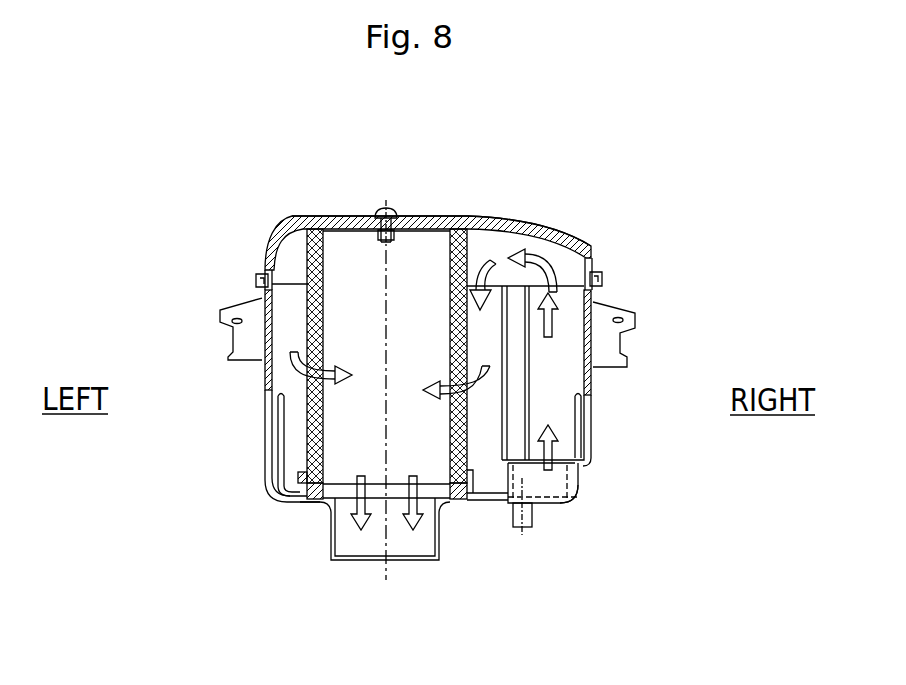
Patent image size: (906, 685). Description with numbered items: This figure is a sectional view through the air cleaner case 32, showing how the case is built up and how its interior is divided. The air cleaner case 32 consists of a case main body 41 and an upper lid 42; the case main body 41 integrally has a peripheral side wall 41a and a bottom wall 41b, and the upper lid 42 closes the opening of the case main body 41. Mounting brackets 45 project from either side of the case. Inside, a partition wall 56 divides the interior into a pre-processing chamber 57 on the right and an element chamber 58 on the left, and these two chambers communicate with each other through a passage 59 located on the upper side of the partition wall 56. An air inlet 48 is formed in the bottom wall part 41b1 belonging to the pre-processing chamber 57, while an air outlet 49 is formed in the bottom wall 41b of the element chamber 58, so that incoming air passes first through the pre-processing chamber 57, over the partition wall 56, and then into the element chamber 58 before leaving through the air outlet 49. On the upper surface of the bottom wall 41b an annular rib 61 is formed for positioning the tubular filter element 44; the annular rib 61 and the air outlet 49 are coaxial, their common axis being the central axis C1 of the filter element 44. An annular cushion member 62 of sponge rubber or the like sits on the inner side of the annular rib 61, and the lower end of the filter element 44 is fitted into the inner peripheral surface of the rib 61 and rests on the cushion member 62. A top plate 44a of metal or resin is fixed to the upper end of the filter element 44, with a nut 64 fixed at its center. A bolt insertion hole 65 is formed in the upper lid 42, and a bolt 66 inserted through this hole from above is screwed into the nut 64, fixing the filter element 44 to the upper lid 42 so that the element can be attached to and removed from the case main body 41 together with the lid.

The air cleaner case 32 is at (226, 240).
The case main body 41 is at (587, 391).
The peripheral side wall 41a is at (270, 394).
The bottom wall 41b is at (303, 490).
The bottom wall part 41b1 is at (572, 493).
The upper lid 42 is at (567, 233).
The filter element 44 is at (286, 447).
The top plate 44a is at (440, 259).
The mounting bracket 45 is at (232, 320).
The air inlet 48 is at (543, 496).
The air outlet 49 is at (330, 553).
The partition wall 56 is at (505, 447).
The pre-processing chamber 57 is at (563, 412).
The element chamber 58 is at (290, 478).
The passage 59 is at (585, 252).
The annular rib 61 is at (300, 475).
The cushion member 62 is at (300, 505).
The nut 64 is at (382, 234).
The bolt insertion hole 65 is at (398, 221).
The bolt 66 is at (383, 208).
The central axis C1 is at (388, 272).